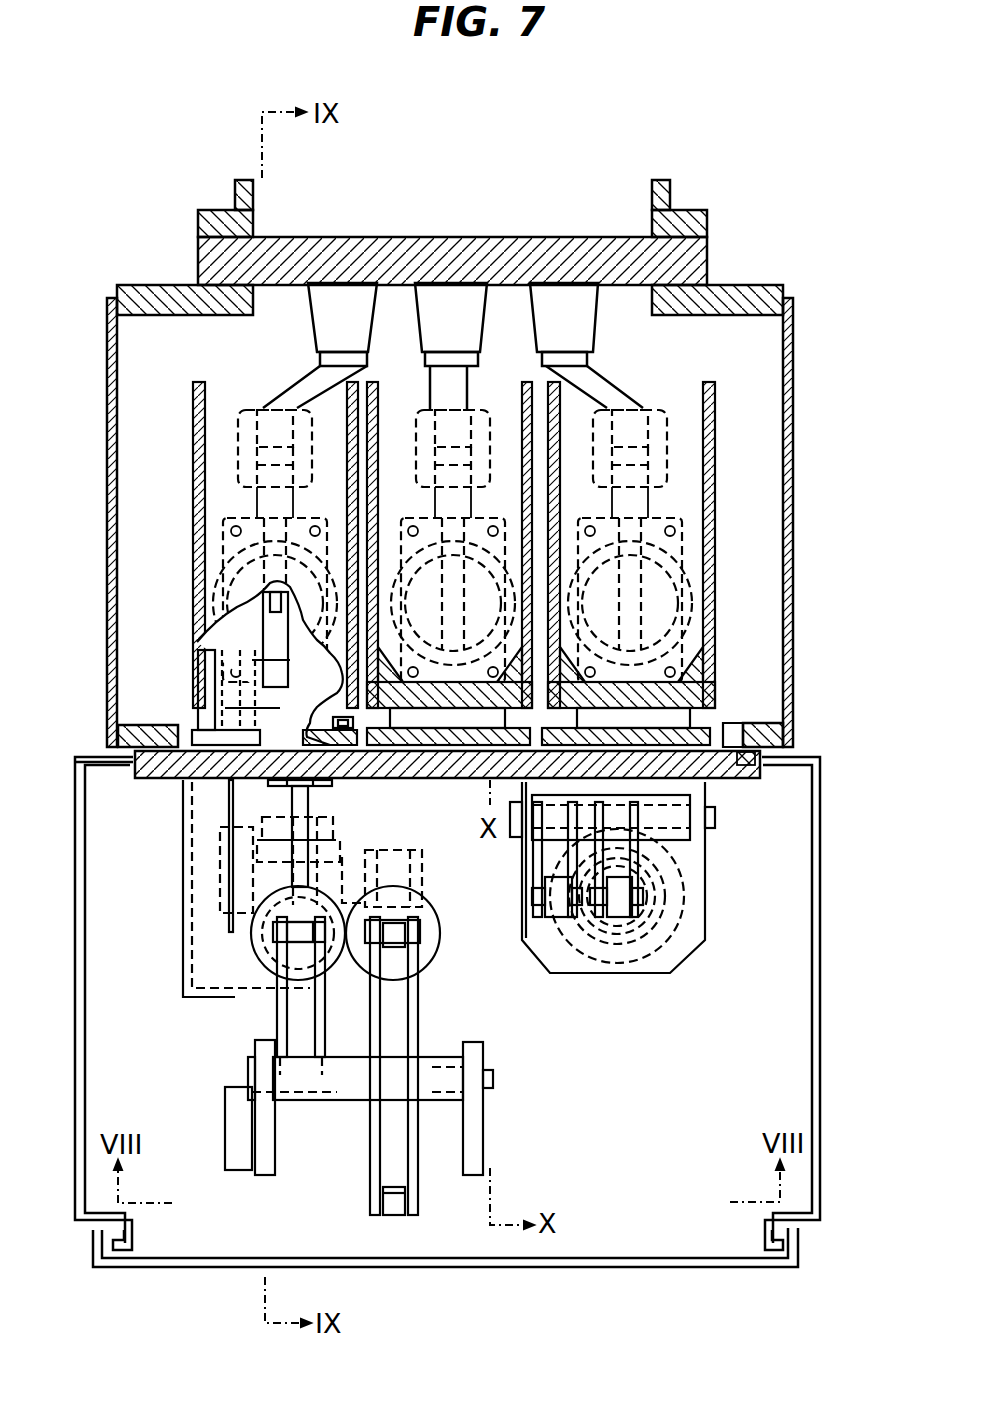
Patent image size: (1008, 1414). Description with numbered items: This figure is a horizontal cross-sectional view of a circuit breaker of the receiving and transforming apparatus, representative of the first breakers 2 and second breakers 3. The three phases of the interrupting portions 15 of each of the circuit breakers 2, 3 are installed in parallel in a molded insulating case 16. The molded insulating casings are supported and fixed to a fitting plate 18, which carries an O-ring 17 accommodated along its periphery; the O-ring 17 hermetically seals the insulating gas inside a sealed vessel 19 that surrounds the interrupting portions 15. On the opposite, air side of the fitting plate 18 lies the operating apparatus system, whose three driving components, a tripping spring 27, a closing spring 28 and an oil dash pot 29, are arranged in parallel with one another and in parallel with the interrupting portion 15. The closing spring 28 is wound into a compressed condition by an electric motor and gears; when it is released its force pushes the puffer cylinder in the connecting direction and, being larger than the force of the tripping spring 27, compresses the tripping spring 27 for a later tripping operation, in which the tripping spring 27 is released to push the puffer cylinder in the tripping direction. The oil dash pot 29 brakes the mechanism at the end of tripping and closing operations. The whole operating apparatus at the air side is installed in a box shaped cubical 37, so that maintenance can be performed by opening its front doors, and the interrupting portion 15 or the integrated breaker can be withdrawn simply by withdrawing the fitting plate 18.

The first breaker 2 is at (818, 318).
The second breaker 3 is at (494, 463).
The interrupting portion 15 is at (657, 600).
The molded insulating case 16 is at (716, 440).
The O-ring 17 is at (743, 723).
The fitting plate 18 is at (740, 782).
The sealed vessel 19 is at (107, 322).
The tripping spring 27 is at (440, 957).
The closing spring 28 is at (683, 960).
The oil dash pot 29 is at (253, 953).
The box shaped cubical 37 is at (817, 1228).